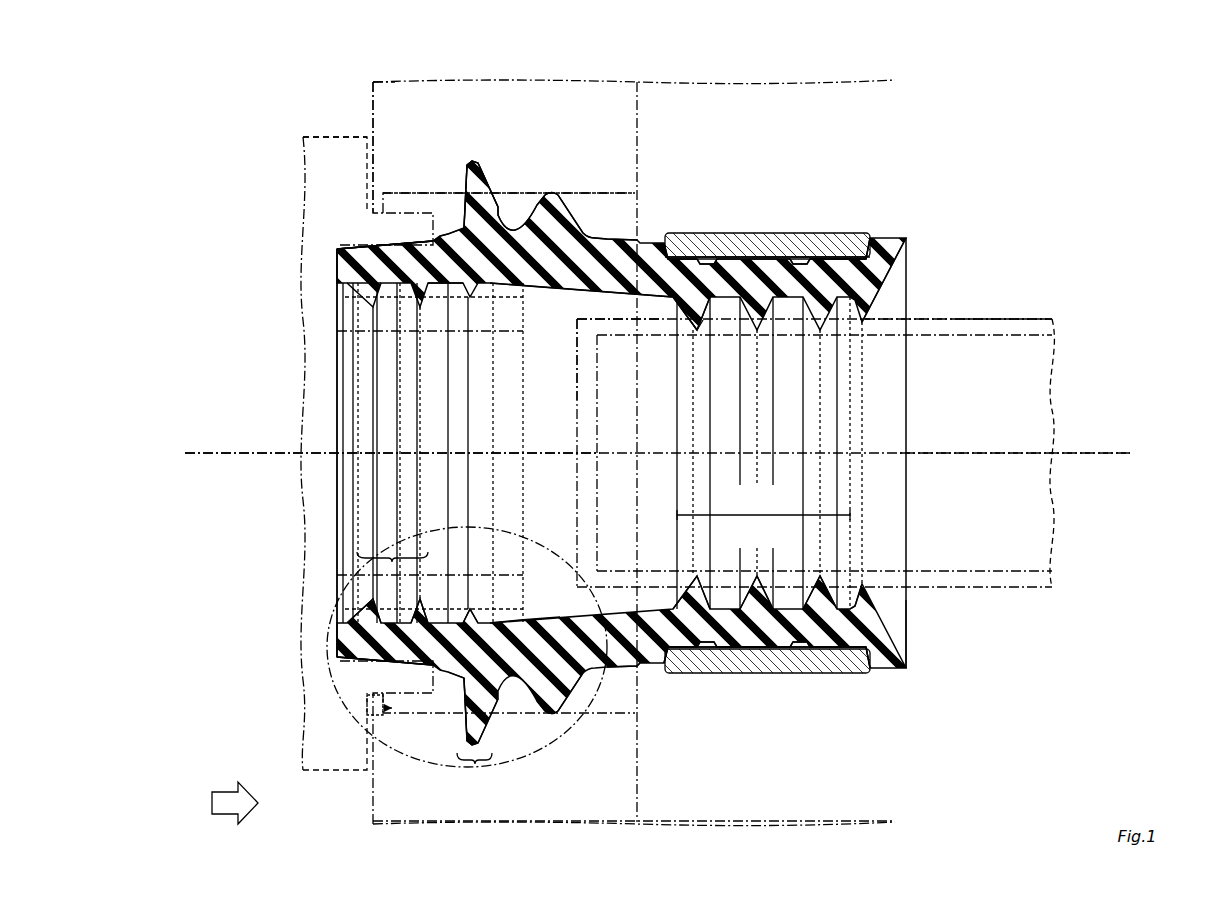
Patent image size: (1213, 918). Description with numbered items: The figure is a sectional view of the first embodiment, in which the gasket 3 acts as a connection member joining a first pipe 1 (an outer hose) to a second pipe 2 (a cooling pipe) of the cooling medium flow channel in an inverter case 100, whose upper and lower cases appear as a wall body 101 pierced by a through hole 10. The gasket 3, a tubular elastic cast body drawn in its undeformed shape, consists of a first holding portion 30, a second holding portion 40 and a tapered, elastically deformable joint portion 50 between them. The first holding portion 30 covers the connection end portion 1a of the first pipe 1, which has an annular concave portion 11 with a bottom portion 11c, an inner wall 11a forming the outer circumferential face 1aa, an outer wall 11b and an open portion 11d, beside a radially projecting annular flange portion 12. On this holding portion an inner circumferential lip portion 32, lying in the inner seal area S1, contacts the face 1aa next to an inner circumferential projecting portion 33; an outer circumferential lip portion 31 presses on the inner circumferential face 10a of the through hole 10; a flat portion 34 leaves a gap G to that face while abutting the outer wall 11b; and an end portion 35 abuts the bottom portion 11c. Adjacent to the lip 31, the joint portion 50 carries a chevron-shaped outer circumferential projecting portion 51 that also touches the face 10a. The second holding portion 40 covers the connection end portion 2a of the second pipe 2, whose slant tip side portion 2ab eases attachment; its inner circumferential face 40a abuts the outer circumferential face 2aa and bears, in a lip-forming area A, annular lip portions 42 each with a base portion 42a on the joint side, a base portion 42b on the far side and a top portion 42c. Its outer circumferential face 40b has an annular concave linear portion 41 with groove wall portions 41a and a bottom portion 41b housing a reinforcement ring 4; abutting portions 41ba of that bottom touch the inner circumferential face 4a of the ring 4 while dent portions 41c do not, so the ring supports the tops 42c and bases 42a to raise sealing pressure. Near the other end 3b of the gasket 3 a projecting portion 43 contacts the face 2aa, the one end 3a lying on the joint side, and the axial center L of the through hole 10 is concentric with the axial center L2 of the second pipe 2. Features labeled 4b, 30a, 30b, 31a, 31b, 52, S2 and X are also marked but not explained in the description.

The first pipe 1 is at (290, 170).
The connection end portion of the first pipe 1a is at (505, 603).
The outer circumferential face of the first pipe 1aa is at (523, 617).
The second pipe 2 is at (1012, 246).
The connection end portion of the second pipe 2a is at (893, 317).
The outer circumferential face of the second pipe 2aa is at (1022, 317).
The slant tip side portion 2ab is at (586, 324).
The gasket 3 is at (625, 505).
The one end of the gasket 3a is at (340, 594).
The other end of the gasket 3b is at (908, 634).
The reinforcement ring 4 is at (773, 238).
The inner circumferential face of the reinforcement ring 4a is at (790, 250).
The seal ring inner surface 4b is at (717, 238).
The through hole 10 is at (652, 212).
The inner circumferential face of the through hole 10a is at (640, 191).
The annular concave portion 11 is at (481, 176).
The inner wall 11a is at (458, 316).
The outer wall 11b is at (392, 228).
The bottom portion 11c is at (345, 262).
The open portion 11d is at (516, 288).
The annular flange portion 12 is at (335, 148).
The first holding portion 30 is at (446, 732).
The flange inner surface 30a is at (386, 303).
The flange outer surface 30b is at (374, 238).
The outer circumferential lip portion 31 is at (486, 730).
The projection side surface 31a is at (462, 683).
The projection side surface 31b is at (468, 700).
The inner circumferential lip portion 32 is at (420, 601).
The inner circumferential projecting portion 33 is at (472, 614).
The flat portion 34 is at (385, 668).
The end portion 35 is at (338, 646).
The second holding portion 40 is at (766, 694).
The inner circumferential face of the second holding portion 40a is at (870, 310).
The outer circumferential face of the second holding portion 40b is at (834, 247).
The concave linear portion 41 is at (838, 662).
The groove wall portions 41a is at (672, 664).
The bottom portion of the concave linear portion 41b is at (702, 258).
The abutting portion 41ba is at (746, 257).
The concave dent portion 41c is at (860, 240).
The lip portion 42 is at (821, 575).
The base portion of the lip portion on the joint portion side 42a is at (681, 305).
The base portion of the lip portion on the opposite side 42b is at (710, 320).
The top portion of the lip portion 42c is at (695, 332).
The projecting portion 43 is at (858, 586).
The joint portion 50 is at (600, 706).
The outer circumferential projecting portion 51 is at (540, 728).
The step 52 is at (638, 670).
The inverter case 100 is at (290, 97).
The wall body 101 is at (388, 106).
The lip-forming area A is at (760, 522).
The gap G is at (378, 716).
The axial center of the through hole L is at (190, 456).
The axial center of the second pipe L2 is at (1120, 456).
The inner seal area S1 is at (410, 553).
The projection width S2 is at (474, 770).
The enlarged region X is at (606, 692).